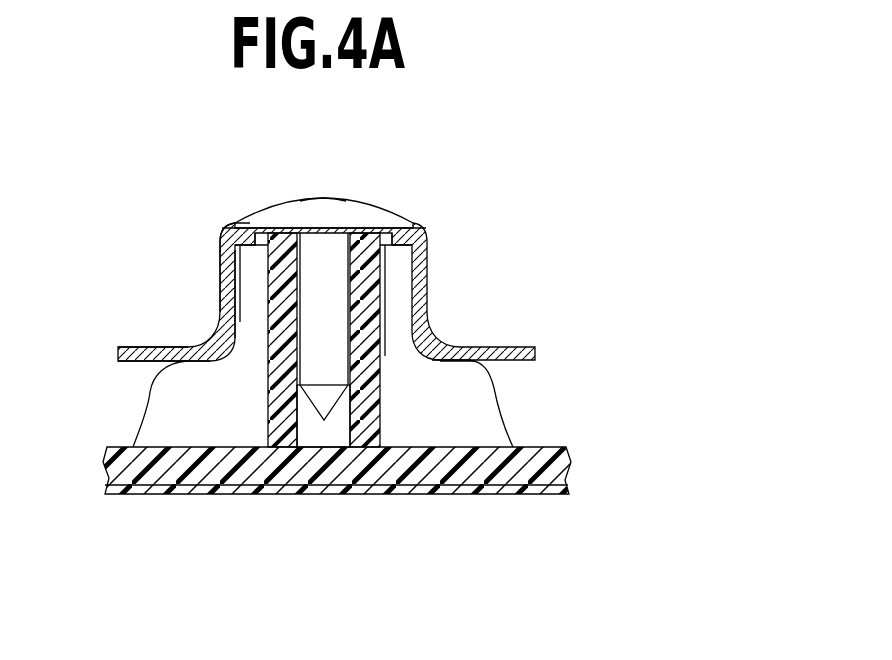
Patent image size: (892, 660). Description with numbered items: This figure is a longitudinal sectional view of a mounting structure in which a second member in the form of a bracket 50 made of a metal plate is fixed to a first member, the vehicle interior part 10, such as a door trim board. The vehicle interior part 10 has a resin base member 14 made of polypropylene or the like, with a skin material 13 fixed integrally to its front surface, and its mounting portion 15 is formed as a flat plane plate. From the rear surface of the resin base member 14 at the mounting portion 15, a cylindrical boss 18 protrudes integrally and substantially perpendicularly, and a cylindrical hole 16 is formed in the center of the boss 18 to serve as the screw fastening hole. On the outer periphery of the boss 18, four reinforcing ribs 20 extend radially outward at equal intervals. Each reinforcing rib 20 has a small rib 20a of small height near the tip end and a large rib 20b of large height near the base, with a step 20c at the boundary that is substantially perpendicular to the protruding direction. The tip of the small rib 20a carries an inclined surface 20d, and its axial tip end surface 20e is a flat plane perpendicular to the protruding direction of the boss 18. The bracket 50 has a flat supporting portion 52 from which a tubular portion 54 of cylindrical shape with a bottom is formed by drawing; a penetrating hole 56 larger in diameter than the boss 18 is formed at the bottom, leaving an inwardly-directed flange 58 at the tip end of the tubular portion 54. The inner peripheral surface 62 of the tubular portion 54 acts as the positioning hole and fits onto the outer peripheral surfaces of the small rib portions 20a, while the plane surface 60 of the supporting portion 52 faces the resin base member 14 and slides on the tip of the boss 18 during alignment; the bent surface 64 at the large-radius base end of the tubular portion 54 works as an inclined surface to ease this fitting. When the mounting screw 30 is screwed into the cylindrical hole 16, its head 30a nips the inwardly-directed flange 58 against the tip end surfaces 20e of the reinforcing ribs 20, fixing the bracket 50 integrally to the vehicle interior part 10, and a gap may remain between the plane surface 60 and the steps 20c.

The vehicle interior part 10 is at (176, 540).
The skin material 13 is at (132, 494).
The resin base member 14 is at (132, 465).
The mounting portion 15 is at (470, 505).
The cylindrical hole 16 is at (297, 430).
The cylindrical boss 18 is at (363, 247).
The reinforcing rib 20 is at (518, 386).
The small rib 20a is at (400, 311).
The large rib 20b is at (482, 415).
The step 20c is at (465, 361).
The inclined surface 20d is at (424, 229).
The tip end surface 20e is at (402, 247).
The mounting screw 30 is at (323, 197).
The head 30a is at (343, 215).
The bracket 50 is at (535, 272).
The supporting portion 52 is at (173, 351).
The tubular portion 54 is at (227, 278).
The penetrating hole 56 is at (287, 228).
The inwardly-directed flange 58 is at (252, 238).
The plane surface 60 is at (173, 366).
The inner peripheral surface 62 is at (240, 320).
The bent surface 64 is at (422, 362).